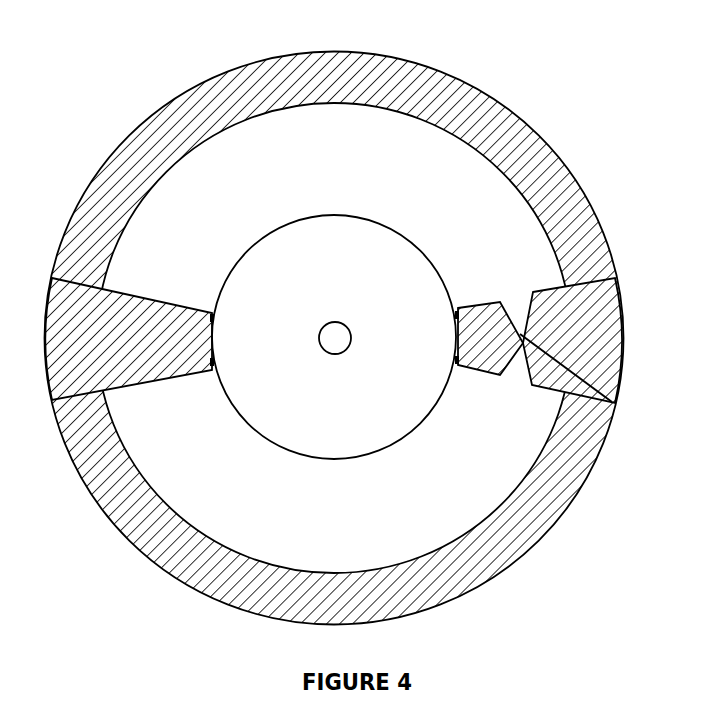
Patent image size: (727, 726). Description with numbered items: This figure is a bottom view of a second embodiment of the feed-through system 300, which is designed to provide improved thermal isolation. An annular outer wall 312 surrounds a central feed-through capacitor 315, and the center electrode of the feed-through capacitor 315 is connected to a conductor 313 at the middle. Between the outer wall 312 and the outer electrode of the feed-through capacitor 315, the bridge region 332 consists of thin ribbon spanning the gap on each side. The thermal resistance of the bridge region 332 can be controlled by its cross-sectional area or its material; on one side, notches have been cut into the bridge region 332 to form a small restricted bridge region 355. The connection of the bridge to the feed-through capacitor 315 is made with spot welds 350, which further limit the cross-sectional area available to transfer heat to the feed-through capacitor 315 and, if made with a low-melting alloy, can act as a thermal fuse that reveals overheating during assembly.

The feed-through system 300 is at (353, 338).
The outer wall 312 is at (570, 193).
The conductor 313 is at (355, 307).
The feed-through capacitor 315 is at (361, 228).
The bridge region 332 is at (167, 368).
The spot welds 350 is at (212, 313).
The restricted bridge region 355 is at (612, 402).